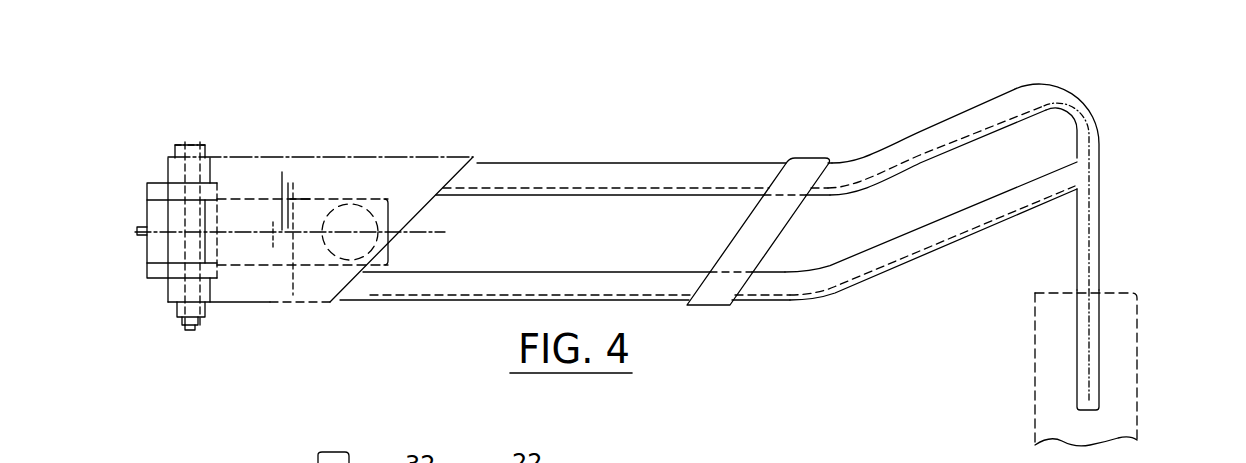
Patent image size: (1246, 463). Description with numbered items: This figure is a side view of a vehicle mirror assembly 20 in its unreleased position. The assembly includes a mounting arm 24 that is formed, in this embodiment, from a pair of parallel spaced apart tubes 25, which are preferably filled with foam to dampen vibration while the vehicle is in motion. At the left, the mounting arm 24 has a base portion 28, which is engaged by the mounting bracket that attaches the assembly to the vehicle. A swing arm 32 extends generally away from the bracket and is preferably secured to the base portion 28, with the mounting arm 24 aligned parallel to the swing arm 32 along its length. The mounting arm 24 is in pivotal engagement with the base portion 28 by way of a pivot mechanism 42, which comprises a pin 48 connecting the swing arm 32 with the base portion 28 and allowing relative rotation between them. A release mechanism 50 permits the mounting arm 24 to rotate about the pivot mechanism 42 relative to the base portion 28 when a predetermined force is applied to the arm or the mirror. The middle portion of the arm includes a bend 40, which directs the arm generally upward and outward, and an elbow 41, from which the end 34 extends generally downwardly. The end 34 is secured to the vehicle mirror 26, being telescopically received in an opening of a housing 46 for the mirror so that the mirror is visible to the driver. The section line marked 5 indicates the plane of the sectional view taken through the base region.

The section line 5- 5 is at (87, 230).
The vehicle mirror assembly 20 is at (708, 112).
The mounting arm 24 is at (763, 161).
The tubes 25 is at (610, 174).
The vehicle mirror 26 is at (1132, 392).
The base portion 28 is at (156, 196).
The swing arm 32 is at (310, 212).
The end 34 is at (1075, 398).
The bend 40 is at (886, 137).
The elbow 41 is at (1100, 85).
The pivot mechanism 42 is at (205, 312).
The housing 46 is at (1125, 332).
The pin 48 is at (192, 186).
The release mechanism 50 is at (362, 198).